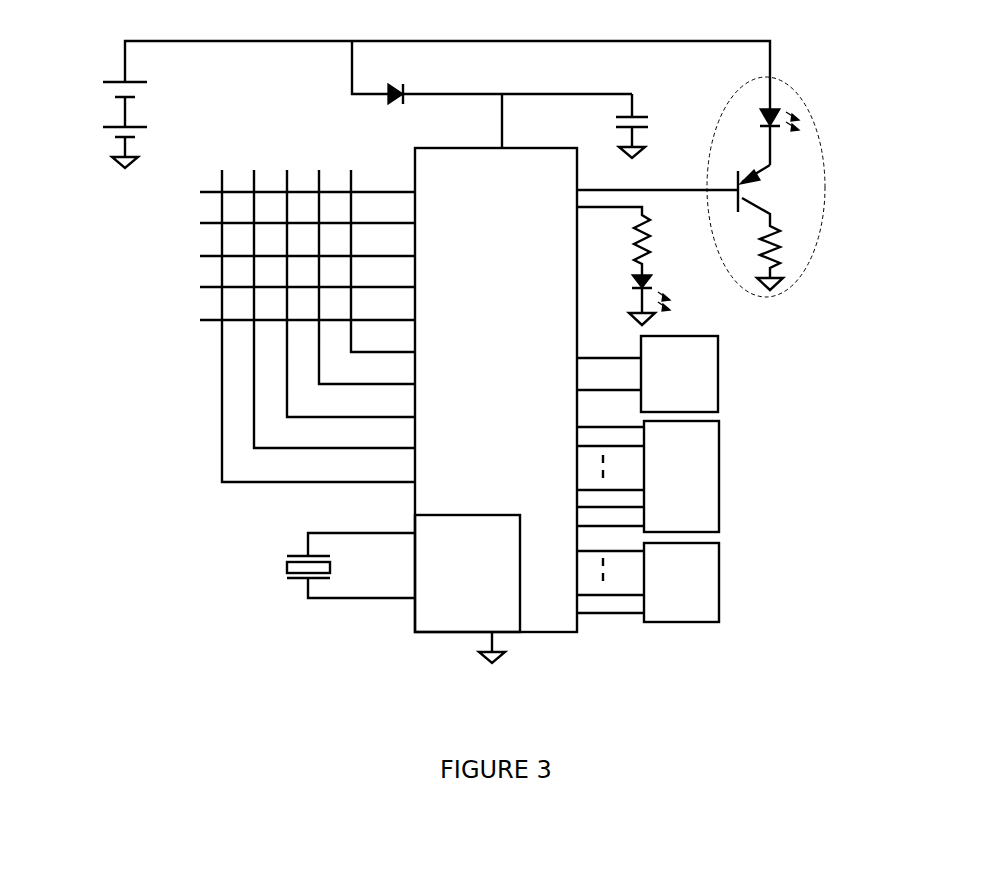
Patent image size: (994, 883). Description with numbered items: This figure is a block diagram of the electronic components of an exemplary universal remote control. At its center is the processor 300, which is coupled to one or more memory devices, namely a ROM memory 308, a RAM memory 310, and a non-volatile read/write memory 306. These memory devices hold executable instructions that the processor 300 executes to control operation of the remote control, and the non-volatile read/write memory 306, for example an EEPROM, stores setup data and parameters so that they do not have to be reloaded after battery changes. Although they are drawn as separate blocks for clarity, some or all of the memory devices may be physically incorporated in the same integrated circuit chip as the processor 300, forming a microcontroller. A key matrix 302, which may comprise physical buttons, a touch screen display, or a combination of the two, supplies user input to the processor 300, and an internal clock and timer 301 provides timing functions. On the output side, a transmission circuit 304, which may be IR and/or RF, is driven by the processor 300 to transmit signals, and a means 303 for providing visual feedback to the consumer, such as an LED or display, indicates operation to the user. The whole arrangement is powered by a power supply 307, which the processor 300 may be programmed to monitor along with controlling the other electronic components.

The processor 300 is at (540, 632).
The internal clock and timer 301 is at (440, 622).
The key matrix 302 is at (163, 254).
The means to provide visual feedback 303 is at (663, 270).
The transmission circuit 304 is at (823, 215).
The non-volatile read/write memory 306 is at (721, 365).
The power supply 307 is at (118, 108).
The ROM memory 308 is at (722, 478).
The RAM memory 310 is at (722, 572).